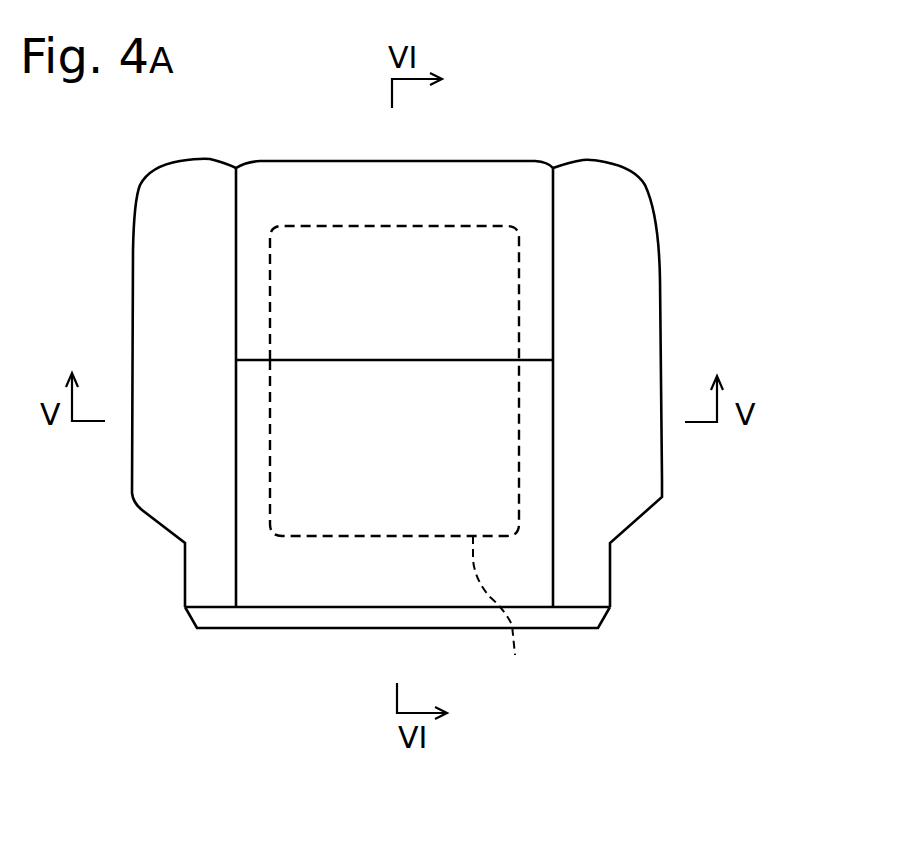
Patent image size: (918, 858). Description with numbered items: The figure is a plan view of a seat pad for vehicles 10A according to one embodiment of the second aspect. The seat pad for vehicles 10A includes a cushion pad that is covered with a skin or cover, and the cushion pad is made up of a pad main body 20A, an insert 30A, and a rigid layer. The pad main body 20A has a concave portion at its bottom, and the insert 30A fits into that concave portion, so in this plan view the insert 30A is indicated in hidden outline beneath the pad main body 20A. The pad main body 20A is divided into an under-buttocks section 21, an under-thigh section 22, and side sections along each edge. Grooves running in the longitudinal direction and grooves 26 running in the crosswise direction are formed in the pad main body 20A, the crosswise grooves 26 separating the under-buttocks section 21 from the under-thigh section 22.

The seat pad for vehicles 10A is at (429, 383).
The pad main body 20A is at (675, 383).
The under-buttocks section 21 is at (342, 517).
The under-thigh section 22 is at (358, 282).
The grooves in a crosswise direction 26 is at (348, 360).
The insert 30A is at (507, 615).